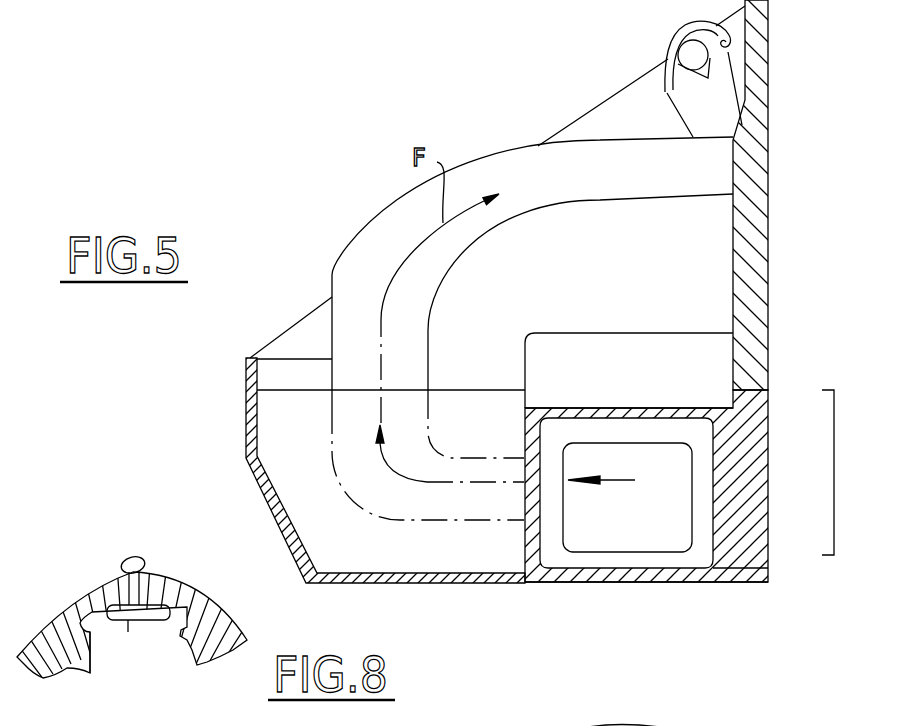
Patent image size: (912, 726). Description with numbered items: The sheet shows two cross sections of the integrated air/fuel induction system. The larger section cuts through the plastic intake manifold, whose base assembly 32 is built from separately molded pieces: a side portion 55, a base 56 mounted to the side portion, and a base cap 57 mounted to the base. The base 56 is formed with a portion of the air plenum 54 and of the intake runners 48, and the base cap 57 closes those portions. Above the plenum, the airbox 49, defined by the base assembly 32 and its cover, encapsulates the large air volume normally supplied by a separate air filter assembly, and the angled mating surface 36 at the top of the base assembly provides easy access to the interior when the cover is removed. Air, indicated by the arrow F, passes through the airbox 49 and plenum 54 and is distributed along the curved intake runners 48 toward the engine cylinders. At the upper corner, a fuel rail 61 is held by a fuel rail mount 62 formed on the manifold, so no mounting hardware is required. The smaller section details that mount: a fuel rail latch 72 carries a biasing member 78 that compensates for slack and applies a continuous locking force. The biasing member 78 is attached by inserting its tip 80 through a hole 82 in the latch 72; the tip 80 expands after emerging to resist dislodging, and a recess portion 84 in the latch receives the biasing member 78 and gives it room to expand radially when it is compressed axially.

In FIG. 5, the base assembly 32 is at (852, 472).
In FIG. 5, the mating surface 36 is at (289, 326).
In FIG. 5, the intake runners 48 is at (504, 157).
In FIG. 5, the airbox 49 is at (690, 239).
In FIG. 5, the air plenum 54 is at (668, 518).
In FIG. 5, the side portion 55 is at (768, 373).
In FIG. 5, the base 56 is at (767, 470).
In FIG. 5, the base cap 57 is at (767, 565).
In FIG. 5, the fuel rail 61 is at (673, 45).
In FIG. 5, the fuel rail mount 62 is at (673, 108).
In FIG. 8, the fuel rail latch 72 is at (222, 622).
In FIG. 8, the biasing member 78 is at (133, 609).
In FIG. 8, the tip 80 is at (141, 557).
In FIG. 8, the hole 82 is at (140, 586).
In FIG. 8, the recess portion 84 is at (94, 624).